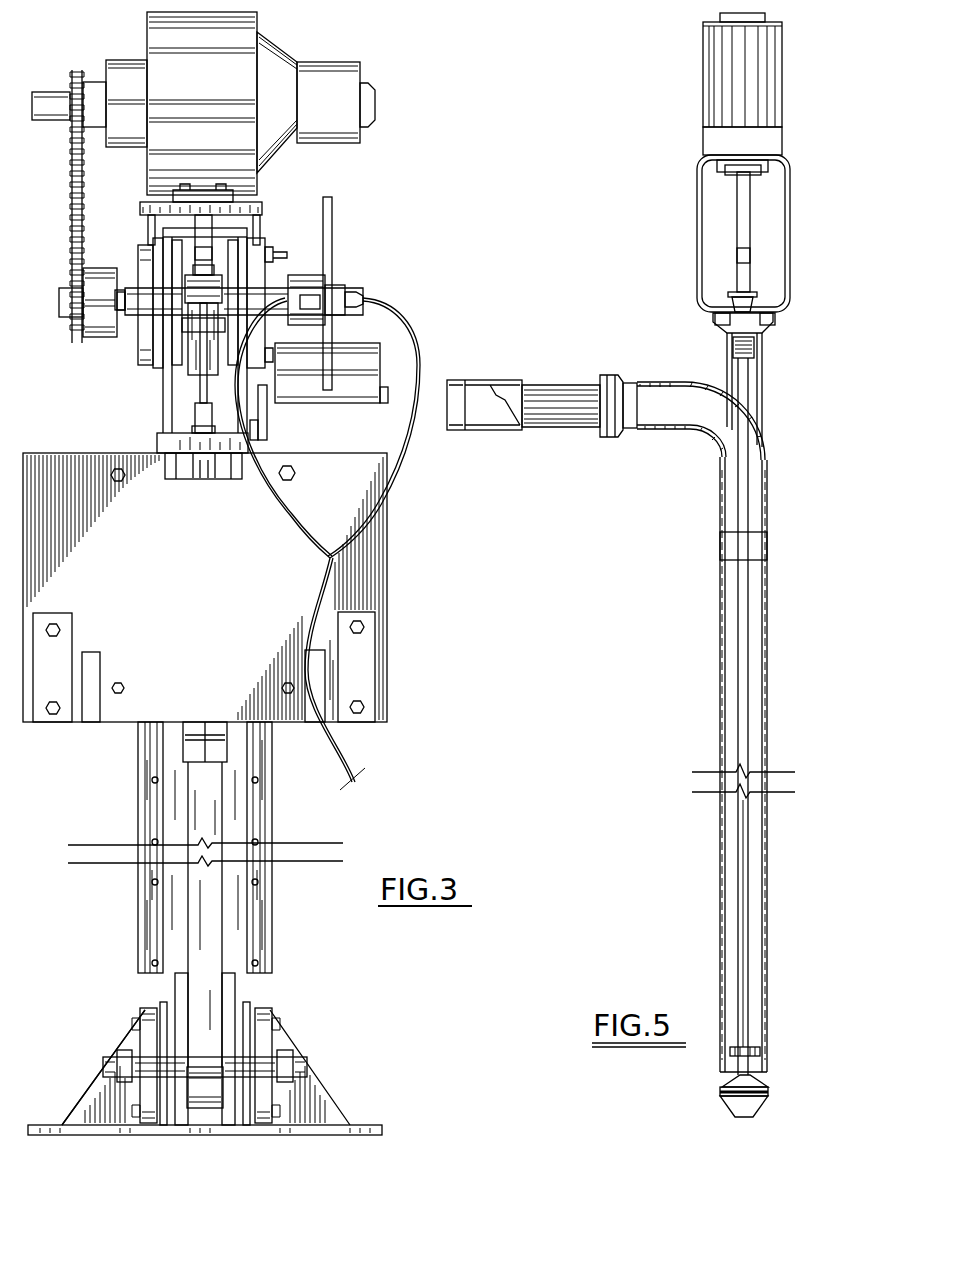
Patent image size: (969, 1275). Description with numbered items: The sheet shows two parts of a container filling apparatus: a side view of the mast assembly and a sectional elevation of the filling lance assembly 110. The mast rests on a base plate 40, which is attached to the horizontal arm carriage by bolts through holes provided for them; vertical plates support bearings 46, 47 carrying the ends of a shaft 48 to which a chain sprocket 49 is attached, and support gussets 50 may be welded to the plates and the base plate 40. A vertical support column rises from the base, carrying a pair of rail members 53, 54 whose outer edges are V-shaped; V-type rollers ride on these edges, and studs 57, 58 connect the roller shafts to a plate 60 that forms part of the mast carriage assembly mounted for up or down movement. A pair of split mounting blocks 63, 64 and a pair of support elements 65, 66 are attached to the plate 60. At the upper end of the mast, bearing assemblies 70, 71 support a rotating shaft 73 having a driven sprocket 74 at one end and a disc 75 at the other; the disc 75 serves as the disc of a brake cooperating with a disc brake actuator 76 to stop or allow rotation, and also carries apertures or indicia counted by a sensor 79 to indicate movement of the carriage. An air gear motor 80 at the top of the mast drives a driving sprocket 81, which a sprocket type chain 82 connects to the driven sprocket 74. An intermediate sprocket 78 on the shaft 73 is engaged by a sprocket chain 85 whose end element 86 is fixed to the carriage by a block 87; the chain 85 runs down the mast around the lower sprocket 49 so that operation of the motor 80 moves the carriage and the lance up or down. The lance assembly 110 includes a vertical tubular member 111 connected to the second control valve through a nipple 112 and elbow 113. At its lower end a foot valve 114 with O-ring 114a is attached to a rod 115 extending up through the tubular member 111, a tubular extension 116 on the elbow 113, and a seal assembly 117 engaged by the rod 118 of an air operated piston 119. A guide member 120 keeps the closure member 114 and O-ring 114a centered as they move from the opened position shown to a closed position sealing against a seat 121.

In FIG. 3, the base plate 40 is at (335, 1123).
In FIG. 3, the bearing 46 is at (142, 1045).
In FIG. 3, the bearing 47 is at (270, 1042).
In FIG. 3, the shaft 48 is at (265, 1062).
In FIG. 3, the chain sprocket 49 is at (187, 1092).
In FIG. 3, the support gusset 50 is at (96, 1088).
In FIG. 3, the rail member 53 is at (148, 930).
In FIG. 3, the rail member 54 is at (268, 925).
In FIG. 3, the stud 57 is at (119, 483).
In FIG. 3, the stud 58 is at (295, 480).
In FIG. 3, the plate 60 is at (217, 597).
In FIG. 3, the split mounting block 63 is at (73, 619).
In FIG. 3, the split mounting block 64 is at (358, 667).
In FIG. 3, the support element 65 is at (101, 663).
In FIG. 3, the support element 66 is at (318, 667).
In FIG. 3, the bearing assembly 70 is at (140, 344).
In FIG. 3, the bearing assembly 71 is at (268, 263).
In FIG. 3, the rotating shaft 73 is at (142, 285).
In FIG. 3, the sprocket 74 is at (70, 320).
In FIG. 3, the disc 75 is at (333, 210).
In FIG. 3, the disc brake actuator 76 is at (343, 403).
In FIG. 3, the intermediate sprocket 78 is at (216, 308).
In FIG. 3, the sensor 79 is at (350, 298).
In FIG. 3, the air gear motor 80 is at (258, 15).
In FIG. 3, the driving sprocket 81 is at (66, 120).
In FIG. 3, the sprocket type chain 82 is at (84, 178).
In FIG. 3, the sprocket chain 85 is at (201, 763).
In FIG. 3, the end element 86 is at (196, 413).
In FIG. 3, the block 87 is at (160, 445).
In FIG. 5, the tubular filling lance assembly 110 is at (722, 607).
In FIG. 5, the vertical tubular member 111 is at (736, 692).
In FIG. 5, the nipple 112 is at (566, 393).
In FIG. 5, the elbow 113 is at (706, 420).
In FIG. 5, the foot valve 114 is at (756, 1102).
In FIG. 5, the O-ring 114a is at (771, 1088).
In FIG. 5, the rod 115 is at (746, 900).
In FIG. 5, the tubular extension 116 is at (724, 376).
In FIG. 5, the seal assembly 117 is at (773, 325).
In FIG. 5, the rod 118 is at (738, 222).
In FIG. 5, the air operated piston 119 is at (716, 80).
In FIG. 5, the guide member 120 is at (756, 1050).
In FIG. 5, the seat 121 is at (728, 1076).